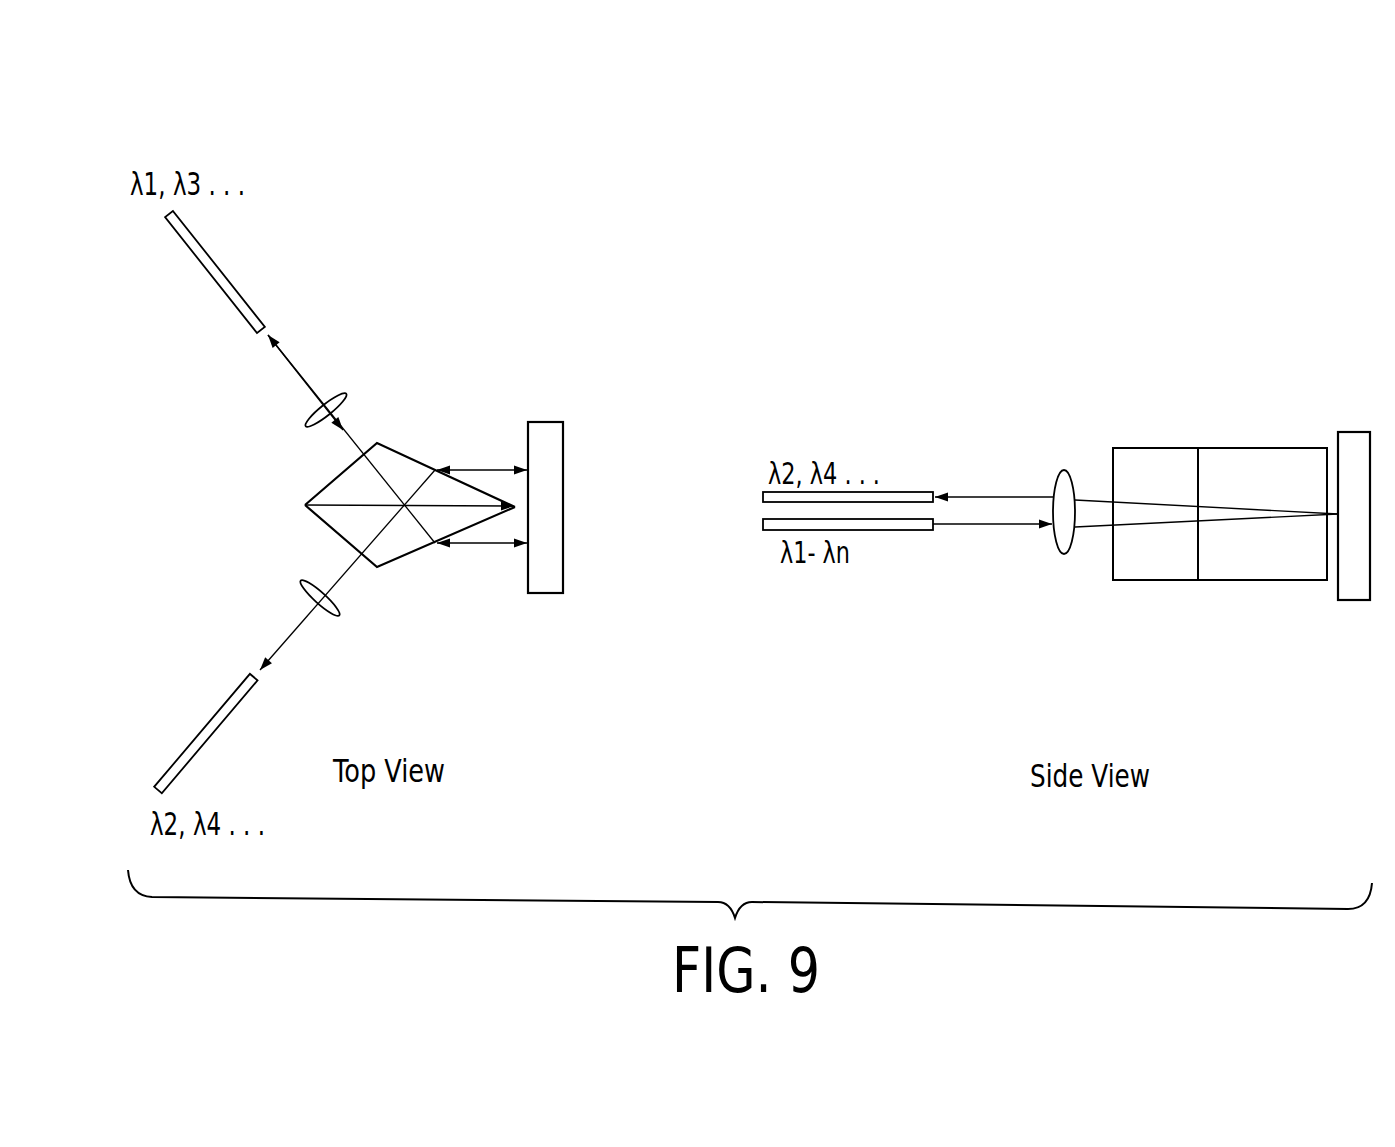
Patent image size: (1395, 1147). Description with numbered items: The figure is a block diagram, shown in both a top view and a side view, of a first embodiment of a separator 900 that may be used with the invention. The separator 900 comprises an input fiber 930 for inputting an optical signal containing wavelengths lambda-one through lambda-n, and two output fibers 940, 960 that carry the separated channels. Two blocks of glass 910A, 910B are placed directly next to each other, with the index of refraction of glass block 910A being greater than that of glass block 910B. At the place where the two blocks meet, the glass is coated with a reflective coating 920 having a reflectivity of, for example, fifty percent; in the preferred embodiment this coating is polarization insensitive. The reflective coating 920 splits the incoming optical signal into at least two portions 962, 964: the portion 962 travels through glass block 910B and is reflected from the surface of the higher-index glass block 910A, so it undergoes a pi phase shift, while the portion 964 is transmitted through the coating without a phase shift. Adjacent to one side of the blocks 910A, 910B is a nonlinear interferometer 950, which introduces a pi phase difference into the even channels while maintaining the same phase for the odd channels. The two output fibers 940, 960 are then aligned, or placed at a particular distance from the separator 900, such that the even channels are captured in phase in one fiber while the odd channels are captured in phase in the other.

The separator 900 is at (434, 285).
The glass block 910A is at (393, 441).
The glass block 910B is at (390, 568).
The reflective coating 920 is at (313, 512).
The input fiber 930 is at (912, 532).
The output fiber 940 is at (196, 739).
The nonlinear interferometer 950 is at (548, 598).
The output fiber 960 is at (214, 288).
The signal portion 962 is at (479, 466).
The signal portion 964 is at (476, 546).